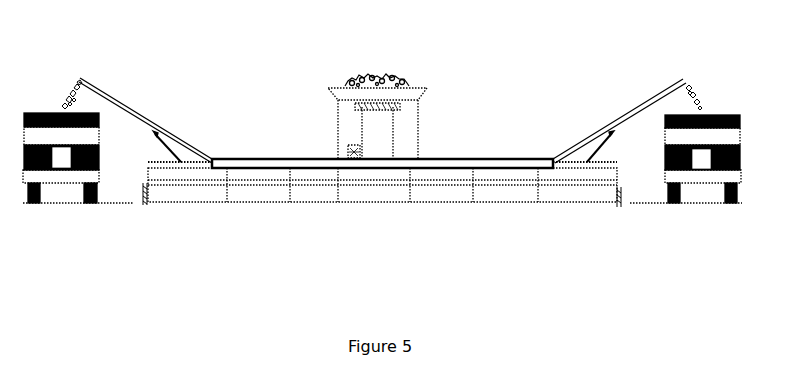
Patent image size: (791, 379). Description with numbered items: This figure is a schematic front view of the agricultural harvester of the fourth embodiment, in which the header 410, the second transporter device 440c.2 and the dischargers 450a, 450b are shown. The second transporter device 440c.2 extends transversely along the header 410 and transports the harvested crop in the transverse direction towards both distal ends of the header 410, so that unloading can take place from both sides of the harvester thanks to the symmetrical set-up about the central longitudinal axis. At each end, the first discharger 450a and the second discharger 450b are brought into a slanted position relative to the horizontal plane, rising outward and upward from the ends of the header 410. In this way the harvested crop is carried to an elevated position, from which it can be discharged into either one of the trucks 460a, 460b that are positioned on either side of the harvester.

The header 410 is at (327, 192).
The second transporter device 440c.2 is at (523, 125).
The first discharger 450a is at (133, 115).
The second discharger 450b is at (630, 112).
The truck 460a is at (42, 133).
The truck 460b is at (722, 138).